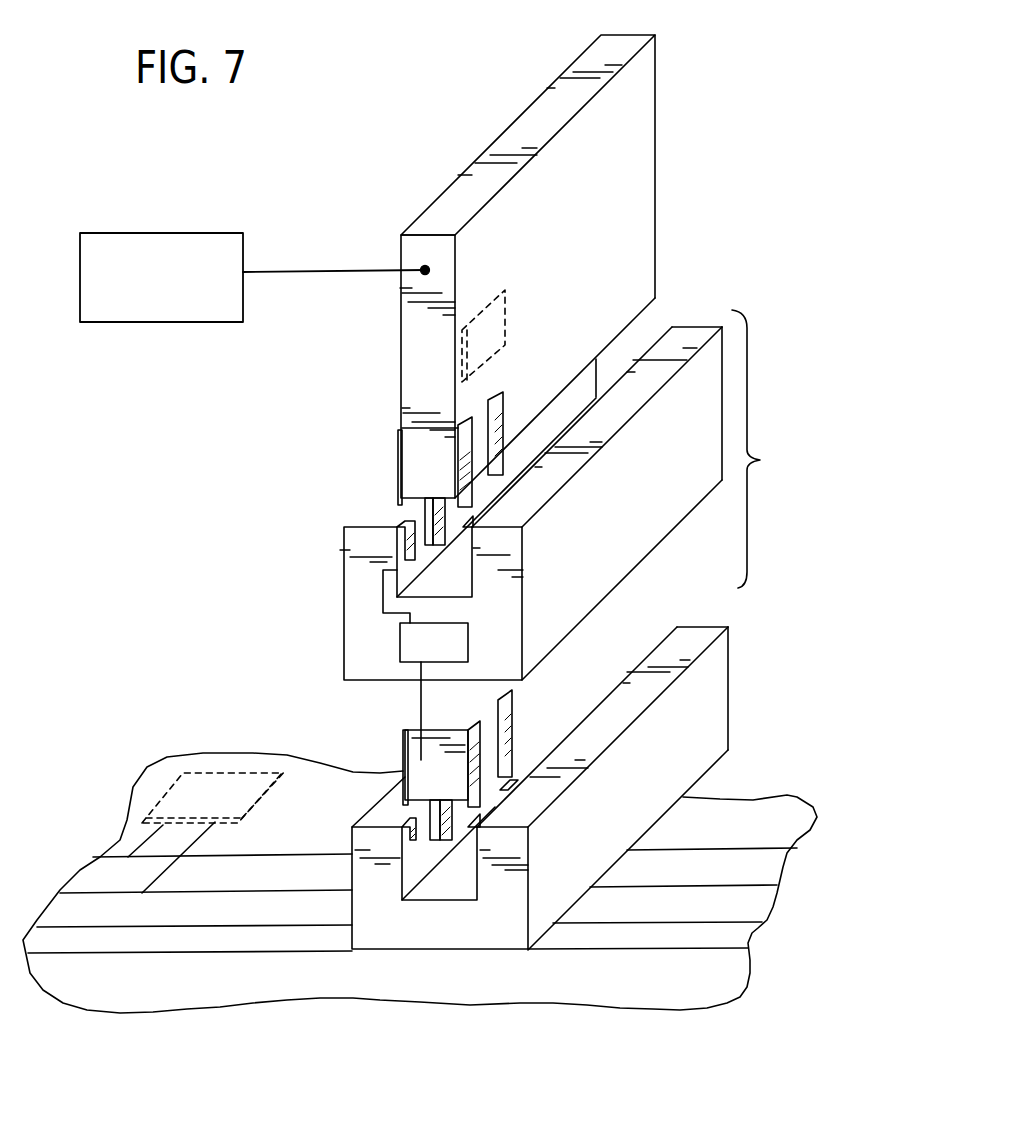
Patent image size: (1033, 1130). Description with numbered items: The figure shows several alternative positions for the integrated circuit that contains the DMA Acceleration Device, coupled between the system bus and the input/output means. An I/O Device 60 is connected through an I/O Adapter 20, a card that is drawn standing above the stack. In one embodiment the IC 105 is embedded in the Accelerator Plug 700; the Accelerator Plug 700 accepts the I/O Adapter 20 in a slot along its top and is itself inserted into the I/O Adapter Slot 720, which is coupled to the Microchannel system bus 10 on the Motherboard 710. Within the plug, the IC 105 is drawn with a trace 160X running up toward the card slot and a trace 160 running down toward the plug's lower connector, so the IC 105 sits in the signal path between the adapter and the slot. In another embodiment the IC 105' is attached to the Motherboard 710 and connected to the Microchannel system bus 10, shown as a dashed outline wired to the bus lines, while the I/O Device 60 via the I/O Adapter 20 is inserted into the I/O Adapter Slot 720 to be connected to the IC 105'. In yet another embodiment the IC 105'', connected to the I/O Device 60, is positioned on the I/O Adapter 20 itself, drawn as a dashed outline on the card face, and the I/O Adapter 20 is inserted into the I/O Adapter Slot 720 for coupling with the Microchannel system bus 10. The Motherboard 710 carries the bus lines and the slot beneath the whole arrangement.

The I/O Device 60 is at (120, 232).
The I/O Adapter 20 is at (633, 220).
The IC 105'' is at (460, 239).
The Accelerator Plug 700 is at (808, 396).
The signal trace between plug connector and IC 160X is at (380, 593).
The IC 105 is at (348, 653).
The signal trace from IC to plug connector 160 is at (423, 701).
The IC 105' is at (194, 783).
The I/O Adapter Slot 720 is at (718, 725).
The Microchannel system bus 10 is at (202, 927).
The Motherboard 710 is at (527, 983).